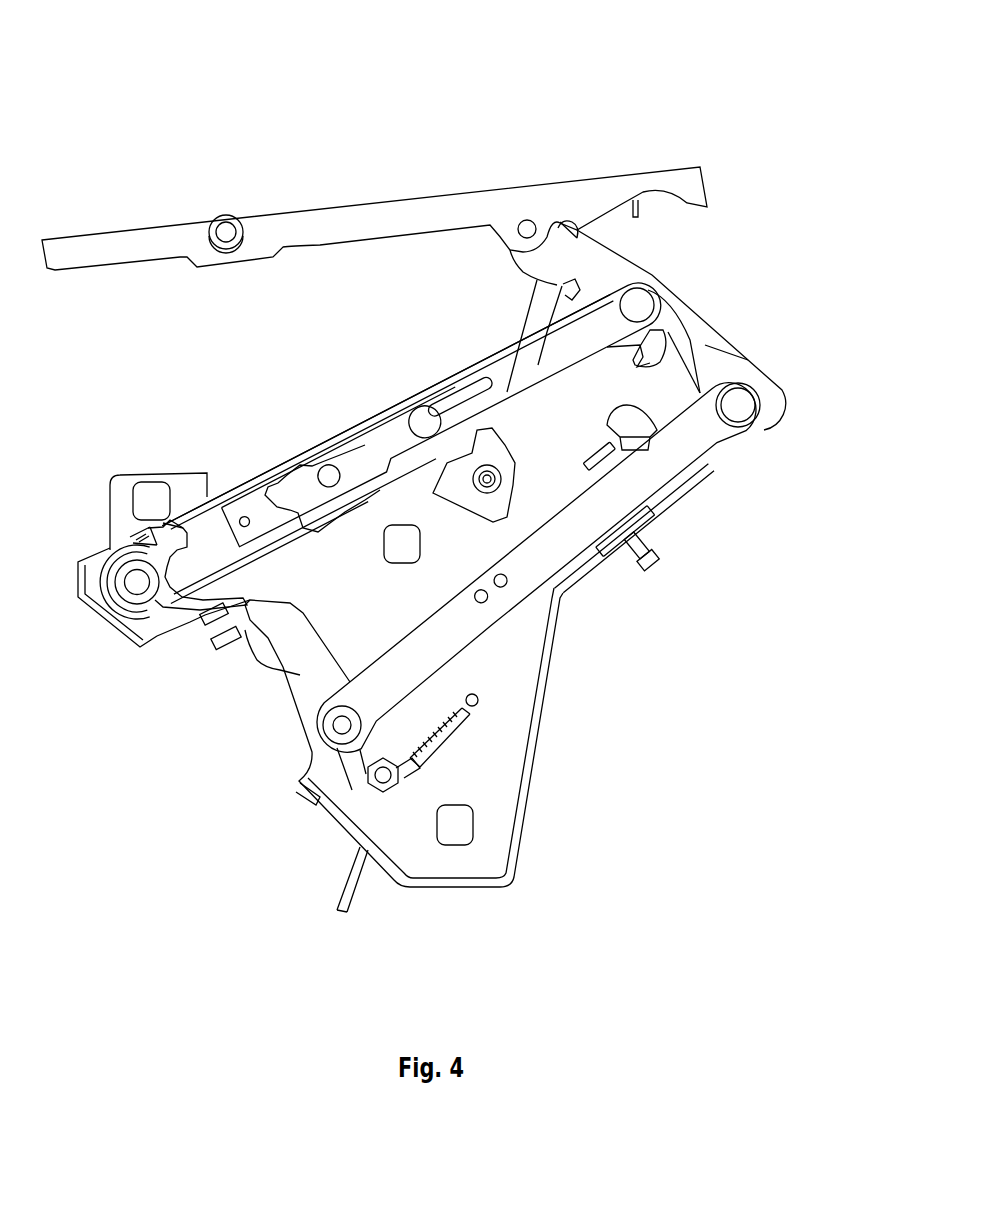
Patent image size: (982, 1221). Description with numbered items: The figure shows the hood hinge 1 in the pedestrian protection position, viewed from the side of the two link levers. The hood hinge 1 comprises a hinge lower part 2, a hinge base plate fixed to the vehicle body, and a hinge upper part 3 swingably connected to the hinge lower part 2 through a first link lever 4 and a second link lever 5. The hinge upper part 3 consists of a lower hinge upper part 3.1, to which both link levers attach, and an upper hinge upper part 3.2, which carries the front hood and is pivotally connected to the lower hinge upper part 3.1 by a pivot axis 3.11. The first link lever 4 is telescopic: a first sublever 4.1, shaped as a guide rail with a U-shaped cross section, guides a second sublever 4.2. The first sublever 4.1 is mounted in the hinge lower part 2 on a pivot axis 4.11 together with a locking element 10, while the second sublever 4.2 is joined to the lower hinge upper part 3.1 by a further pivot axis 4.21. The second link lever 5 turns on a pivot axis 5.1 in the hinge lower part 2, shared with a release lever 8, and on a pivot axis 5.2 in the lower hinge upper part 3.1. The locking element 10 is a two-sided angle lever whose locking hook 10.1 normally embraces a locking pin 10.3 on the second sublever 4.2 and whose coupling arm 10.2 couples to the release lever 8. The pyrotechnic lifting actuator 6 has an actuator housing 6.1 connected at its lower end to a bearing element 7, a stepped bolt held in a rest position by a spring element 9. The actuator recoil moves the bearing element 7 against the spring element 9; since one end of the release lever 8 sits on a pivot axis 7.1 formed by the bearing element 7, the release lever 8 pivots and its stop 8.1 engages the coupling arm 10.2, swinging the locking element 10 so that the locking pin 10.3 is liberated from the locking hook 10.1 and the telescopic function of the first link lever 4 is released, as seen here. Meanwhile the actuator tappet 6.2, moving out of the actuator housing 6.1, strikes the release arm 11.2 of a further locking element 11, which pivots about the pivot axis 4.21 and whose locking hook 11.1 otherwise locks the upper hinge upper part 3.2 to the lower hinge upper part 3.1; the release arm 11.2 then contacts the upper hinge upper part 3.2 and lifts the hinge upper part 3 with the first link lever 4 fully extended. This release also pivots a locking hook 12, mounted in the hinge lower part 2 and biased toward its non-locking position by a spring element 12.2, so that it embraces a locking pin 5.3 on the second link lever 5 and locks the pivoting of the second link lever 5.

The hood hinge 1 is at (188, 147).
The hinge lower part 2 is at (541, 741).
The hinge upper part 3 is at (720, 310).
The lower hinge upper part 3.1 is at (740, 355).
The upper hinge upper part 3.2 is at (360, 215).
The pivot axis 3.11 is at (528, 220).
The first link lever 4 is at (287, 450).
The first sublever 4.1 is at (330, 432).
The second sublever 4.2 is at (387, 442).
The pivot axis 4.11 is at (100, 615).
The further pivot axis 4.21 is at (638, 300).
The second link lever 5 is at (728, 448).
The pivot axis 5.1 is at (340, 726).
The further pivot axis 5.2 is at (740, 405).
The locking pin 5.3 is at (603, 450).
The lifting actuator 6 is at (477, 427).
The actuator housing 6.1 is at (478, 453).
The actuator tappet 6.2 is at (534, 316).
The bearing element 7 is at (363, 774).
The pivot axis 7.1 is at (393, 787).
The release lever 8 is at (277, 671).
The stop 8.1 is at (200, 617).
The spring element 9 is at (455, 738).
The locking element 10 is at (133, 540).
The locking hook 10.1 is at (183, 527).
The coupling arm 10.2 is at (217, 645).
The locking pin 10.3 is at (250, 523).
The further locking element 11 is at (667, 330).
The locking hook 11.1 is at (645, 368).
The release arm 11.2 is at (567, 220).
The locking hook 12 is at (647, 407).
The spring element 12.2 is at (587, 473).